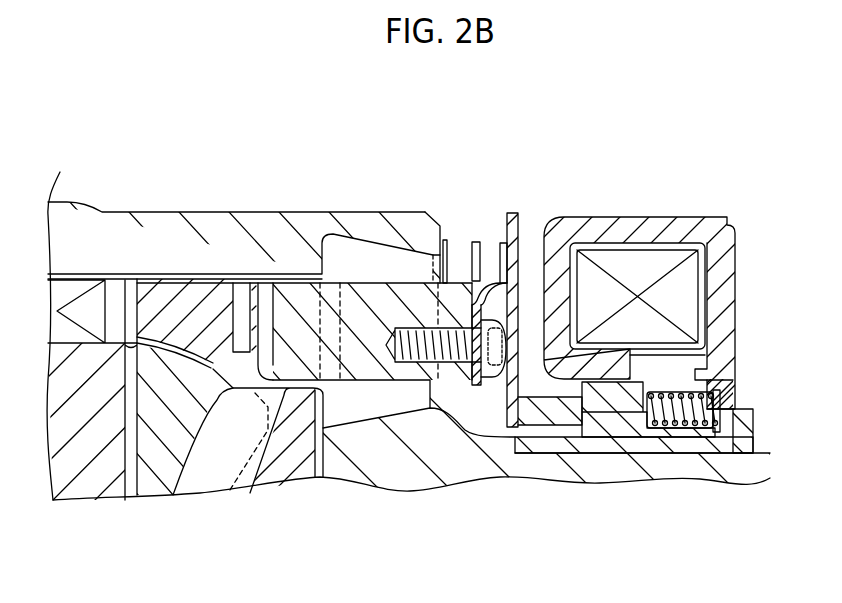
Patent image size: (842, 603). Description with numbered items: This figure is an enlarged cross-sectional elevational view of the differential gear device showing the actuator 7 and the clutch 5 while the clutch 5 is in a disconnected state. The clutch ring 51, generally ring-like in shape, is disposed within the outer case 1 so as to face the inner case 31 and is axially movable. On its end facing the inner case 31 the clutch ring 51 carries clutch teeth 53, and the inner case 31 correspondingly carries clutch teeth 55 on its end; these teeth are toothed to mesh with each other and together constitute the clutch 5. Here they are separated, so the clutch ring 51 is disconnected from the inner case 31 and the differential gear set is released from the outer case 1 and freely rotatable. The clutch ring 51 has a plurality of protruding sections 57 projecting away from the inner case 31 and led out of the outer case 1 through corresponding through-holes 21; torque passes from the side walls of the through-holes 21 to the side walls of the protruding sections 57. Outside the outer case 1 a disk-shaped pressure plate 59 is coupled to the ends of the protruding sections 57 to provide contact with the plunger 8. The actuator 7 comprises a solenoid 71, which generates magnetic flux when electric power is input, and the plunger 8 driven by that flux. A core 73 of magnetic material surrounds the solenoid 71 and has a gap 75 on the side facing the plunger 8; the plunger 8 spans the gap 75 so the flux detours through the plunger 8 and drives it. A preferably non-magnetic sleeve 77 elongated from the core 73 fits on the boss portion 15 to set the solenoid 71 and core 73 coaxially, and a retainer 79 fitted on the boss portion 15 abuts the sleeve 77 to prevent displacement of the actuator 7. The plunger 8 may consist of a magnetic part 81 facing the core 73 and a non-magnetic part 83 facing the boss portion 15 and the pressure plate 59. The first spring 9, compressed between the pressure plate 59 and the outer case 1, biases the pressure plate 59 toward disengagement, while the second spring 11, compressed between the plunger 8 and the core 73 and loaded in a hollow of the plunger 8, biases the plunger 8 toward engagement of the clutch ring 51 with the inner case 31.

The outer case 1 is at (103, 210).
The clutch 5 is at (222, 172).
The actuator 7 is at (689, 130).
The plunger 8 is at (533, 540).
The first spring 9 is at (476, 240).
The second spring 11 is at (717, 383).
The boss portion 15 is at (745, 467).
The through-holes 21 is at (415, 260).
The inner case 31 is at (181, 293).
The clutch ring 51 is at (300, 293).
The clutch teeth 53 is at (267, 293).
The clutch teeth 55 is at (241, 293).
The protruding sections 57 is at (388, 297).
The pressure plate 59 is at (519, 228).
The solenoid 71 is at (637, 260).
The core 73 is at (727, 250).
The gap 75 is at (692, 347).
The sleeve 77 is at (658, 448).
The retainer 79 is at (754, 426).
The magnetic part 81 is at (602, 408).
The non-magnetic part 83 is at (553, 427).